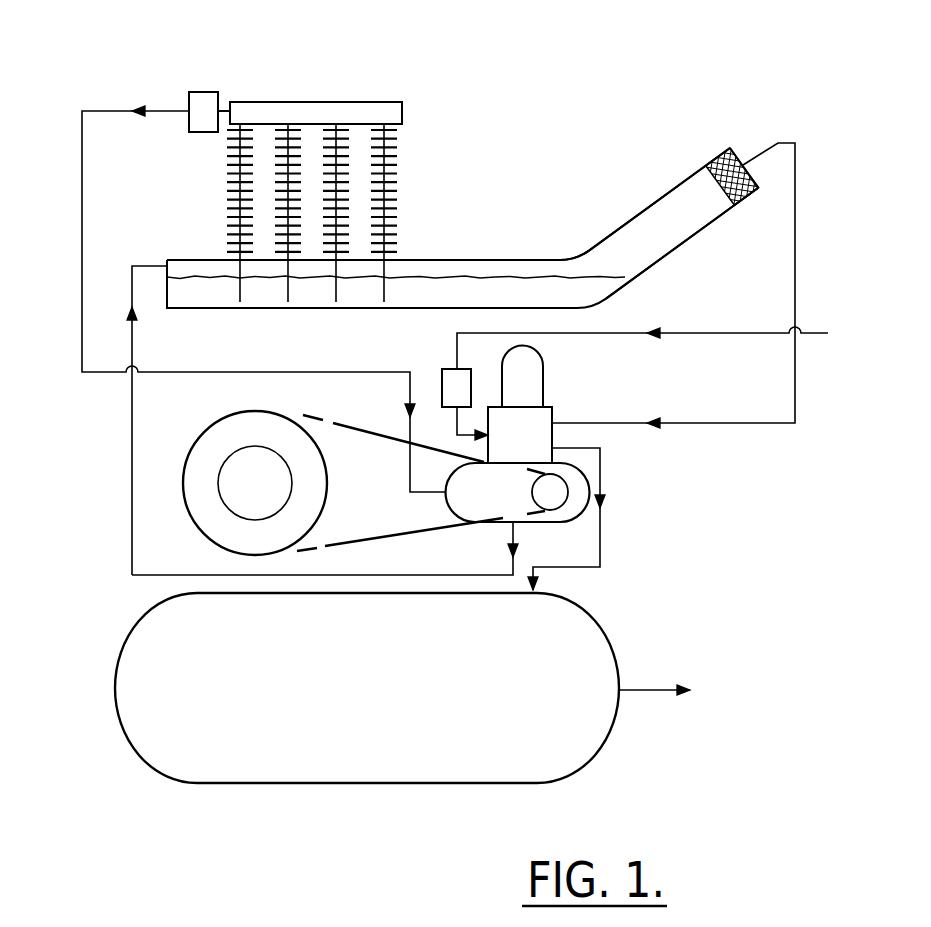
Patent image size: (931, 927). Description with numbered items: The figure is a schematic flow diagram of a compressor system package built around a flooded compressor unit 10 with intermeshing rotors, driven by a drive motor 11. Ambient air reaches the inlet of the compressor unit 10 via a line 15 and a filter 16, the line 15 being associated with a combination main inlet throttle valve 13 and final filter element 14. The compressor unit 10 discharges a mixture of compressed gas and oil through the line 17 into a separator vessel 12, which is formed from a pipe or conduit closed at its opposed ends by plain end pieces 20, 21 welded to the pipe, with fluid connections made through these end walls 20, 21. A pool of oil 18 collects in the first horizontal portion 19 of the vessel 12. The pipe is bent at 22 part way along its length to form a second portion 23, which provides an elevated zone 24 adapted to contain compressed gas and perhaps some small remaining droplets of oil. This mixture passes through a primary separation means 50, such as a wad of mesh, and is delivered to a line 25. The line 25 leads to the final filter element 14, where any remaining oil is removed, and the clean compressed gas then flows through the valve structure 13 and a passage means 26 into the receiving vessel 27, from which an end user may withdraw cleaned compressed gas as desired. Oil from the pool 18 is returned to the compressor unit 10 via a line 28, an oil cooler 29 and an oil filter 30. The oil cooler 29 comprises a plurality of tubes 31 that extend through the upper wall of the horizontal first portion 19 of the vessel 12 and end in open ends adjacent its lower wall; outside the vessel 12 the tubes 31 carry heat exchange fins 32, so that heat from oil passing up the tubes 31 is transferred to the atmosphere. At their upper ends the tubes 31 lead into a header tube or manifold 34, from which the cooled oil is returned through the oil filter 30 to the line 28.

The flooded compressor unit 10 is at (570, 510).
The drive motor 11 is at (215, 525).
The separator vessel 12 is at (410, 320).
The main inlet throttle valve 13 is at (552, 410).
The final filter element 14 is at (527, 363).
The line 15 is at (713, 340).
The filter 16 is at (447, 372).
The line 17 is at (132, 457).
The pool of oil 18 is at (190, 293).
The first horizontal portion 19 is at (448, 262).
The plain end piece 20 is at (167, 282).
The plain end piece 21 is at (745, 160).
The bend 22 is at (573, 257).
The second portion 23 is at (632, 215).
The elevated zone 24 is at (675, 223).
The line 25 is at (795, 240).
The passage means 26 is at (600, 557).
The receiving vessel 27 is at (350, 783).
The line 28 is at (82, 168).
The oil cooler 29 is at (315, 164).
The oil filter 30 is at (204, 92).
The tubes 31 is at (227, 213).
The heat exchange fins 32 is at (397, 162).
The header tube or manifold 34 is at (308, 115).
The primary separation means 50 is at (717, 155).